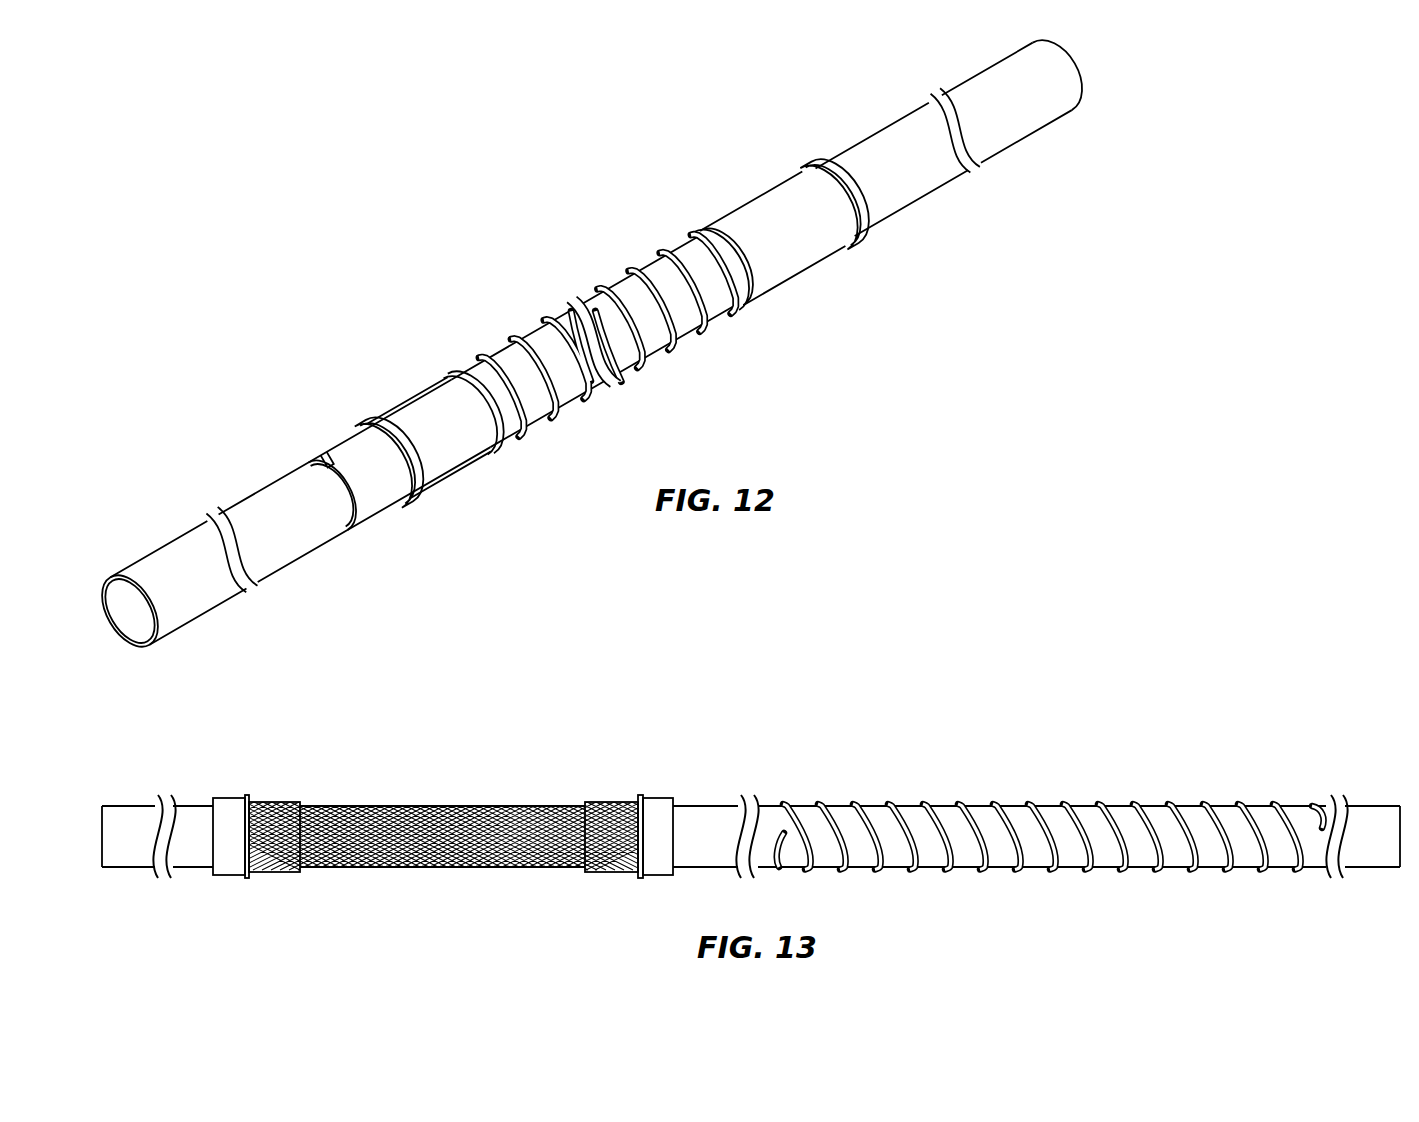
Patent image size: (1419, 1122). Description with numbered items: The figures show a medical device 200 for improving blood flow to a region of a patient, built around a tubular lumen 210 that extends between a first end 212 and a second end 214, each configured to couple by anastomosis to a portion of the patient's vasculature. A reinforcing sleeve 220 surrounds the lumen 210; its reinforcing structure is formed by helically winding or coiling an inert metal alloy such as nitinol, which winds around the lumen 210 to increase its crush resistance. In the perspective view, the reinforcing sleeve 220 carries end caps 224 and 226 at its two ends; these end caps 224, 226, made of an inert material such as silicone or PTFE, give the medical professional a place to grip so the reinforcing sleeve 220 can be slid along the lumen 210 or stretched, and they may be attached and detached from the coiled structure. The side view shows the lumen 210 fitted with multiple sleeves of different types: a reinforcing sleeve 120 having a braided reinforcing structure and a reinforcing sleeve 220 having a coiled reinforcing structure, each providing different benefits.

In FIG. 12, the medical device 200 is at (622, 376).
In FIG. 12, the lumen 210 is at (893, 193).
In FIG. 12, the first end 212 is at (1077, 92).
In FIG. 12, the second end 214 is at (172, 637).
In FIG. 12, the reinforcing sleeve 220 is at (464, 346).
In FIG. 13, the reinforcing sleeve 220 is at (1115, 767).
In FIG. 12, the end cap 224 is at (390, 507).
In FIG. 12, the end cap 226 is at (825, 257).
In FIG. 13, the reinforcing sleeve 120 is at (750, 790).